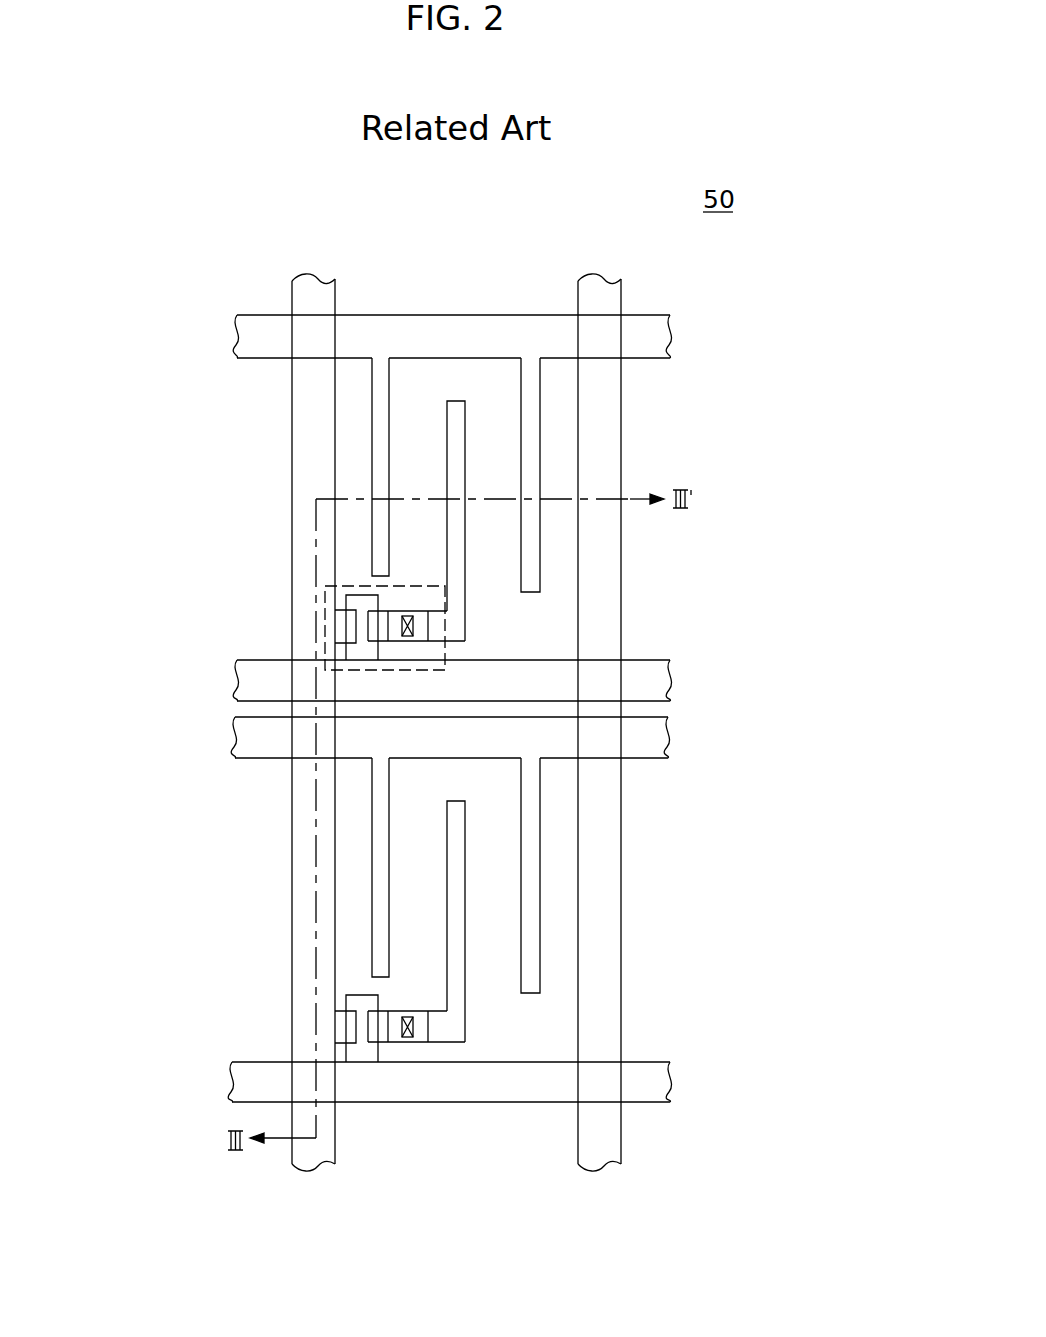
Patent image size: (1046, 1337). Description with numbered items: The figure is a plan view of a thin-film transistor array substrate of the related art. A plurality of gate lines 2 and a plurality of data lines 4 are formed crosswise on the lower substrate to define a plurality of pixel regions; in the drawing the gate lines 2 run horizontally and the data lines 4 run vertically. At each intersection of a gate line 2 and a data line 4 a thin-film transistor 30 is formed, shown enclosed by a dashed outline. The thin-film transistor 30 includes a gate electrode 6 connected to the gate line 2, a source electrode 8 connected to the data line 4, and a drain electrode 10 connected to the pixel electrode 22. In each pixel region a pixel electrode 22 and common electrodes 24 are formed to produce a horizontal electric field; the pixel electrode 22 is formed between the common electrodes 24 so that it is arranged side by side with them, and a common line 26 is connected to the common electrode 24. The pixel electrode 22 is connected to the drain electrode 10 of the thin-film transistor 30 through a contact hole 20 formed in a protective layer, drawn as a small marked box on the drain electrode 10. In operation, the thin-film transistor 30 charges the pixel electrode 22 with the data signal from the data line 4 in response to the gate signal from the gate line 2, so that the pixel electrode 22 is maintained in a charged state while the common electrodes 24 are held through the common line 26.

The gate line 2 is at (658, 665).
The data line 4 is at (311, 1166).
The gate electrode 6 is at (348, 603).
The source electrode 8 is at (340, 619).
The drain electrode 10 is at (365, 613).
The contact hole 20 is at (407, 614).
The pixel electrode 22 is at (455, 627).
The common electrode 24 is at (373, 420).
The common line 26 is at (237, 340).
The thin-film transistor 30 is at (325, 647).